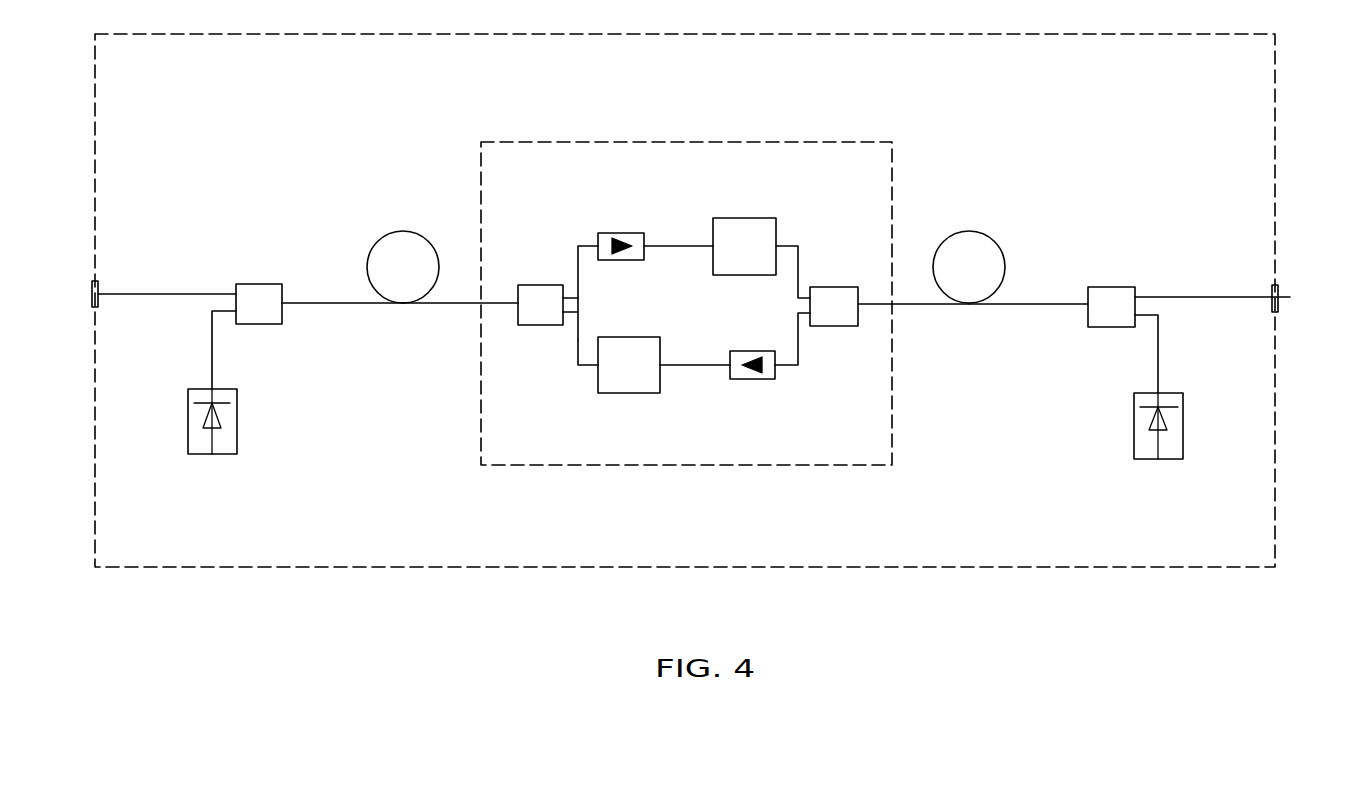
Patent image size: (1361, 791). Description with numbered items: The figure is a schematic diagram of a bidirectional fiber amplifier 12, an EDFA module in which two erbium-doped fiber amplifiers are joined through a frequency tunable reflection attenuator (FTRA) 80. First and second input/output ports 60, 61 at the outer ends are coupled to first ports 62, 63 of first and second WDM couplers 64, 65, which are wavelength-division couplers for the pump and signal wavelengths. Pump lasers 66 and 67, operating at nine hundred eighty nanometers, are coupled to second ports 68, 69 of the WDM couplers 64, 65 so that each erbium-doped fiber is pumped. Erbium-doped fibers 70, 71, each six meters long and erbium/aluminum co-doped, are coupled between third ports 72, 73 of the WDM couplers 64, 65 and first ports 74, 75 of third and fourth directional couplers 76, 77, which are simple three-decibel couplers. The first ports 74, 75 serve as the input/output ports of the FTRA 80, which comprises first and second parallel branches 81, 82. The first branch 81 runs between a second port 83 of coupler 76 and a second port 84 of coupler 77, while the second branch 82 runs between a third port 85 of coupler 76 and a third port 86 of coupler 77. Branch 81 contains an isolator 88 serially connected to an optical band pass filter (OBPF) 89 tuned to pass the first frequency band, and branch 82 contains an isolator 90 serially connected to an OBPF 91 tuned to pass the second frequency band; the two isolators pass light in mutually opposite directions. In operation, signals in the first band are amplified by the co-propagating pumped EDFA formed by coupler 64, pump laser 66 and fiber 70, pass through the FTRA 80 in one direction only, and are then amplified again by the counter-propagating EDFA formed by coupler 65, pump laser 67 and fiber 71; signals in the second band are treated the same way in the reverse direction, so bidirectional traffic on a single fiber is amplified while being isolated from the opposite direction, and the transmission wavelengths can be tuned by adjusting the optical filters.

The bidirectional fiber amplifier 12 is at (132, 66).
The first input/output port 60 is at (92, 289).
The second input/output port 61 is at (1280, 296).
The first port of first WDM coupler 62 is at (152, 296).
The first port of second WDM coupler 63 is at (1215, 298).
The first WDM coupler 64 is at (273, 318).
The second WDM coupler 65 is at (1125, 320).
The pump laser 66 is at (188, 402).
The pump laser 67 is at (1184, 404).
The second port of first WDM coupler 68 is at (213, 344).
The second port of second WDM coupler 69 is at (1157, 345).
The erbium-doped fiber 70 is at (378, 242).
The erbium-doped fiber 71 is at (1000, 242).
The third port of first WDM coupler 72 is at (302, 305).
The third port of second WDM coupler 73 is at (1070, 304).
The first port of third directional coupler 74 is at (430, 304).
The first port of fourth directional coupler 75 is at (940, 304).
The third directional coupler 76 is at (554, 318).
The fourth directional coupler 77 is at (847, 319).
The frequency tunable reflection attenuator (FTRA) 80 is at (523, 182).
The first parallel branch 81 is at (590, 247).
The second parallel branch 82 is at (590, 366).
The second port of coupler 76 83 is at (580, 272).
The second port of coupler 77 84 is at (797, 292).
The third port of coupler 76 85 is at (578, 328).
The third port of coupler 77 86 is at (797, 345).
The isolator 88 is at (645, 231).
The optical band pass filter (OBPF) 89 is at (776, 222).
The isolator 90 is at (730, 380).
The optical band pass filter (OBPF) 91 is at (598, 392).